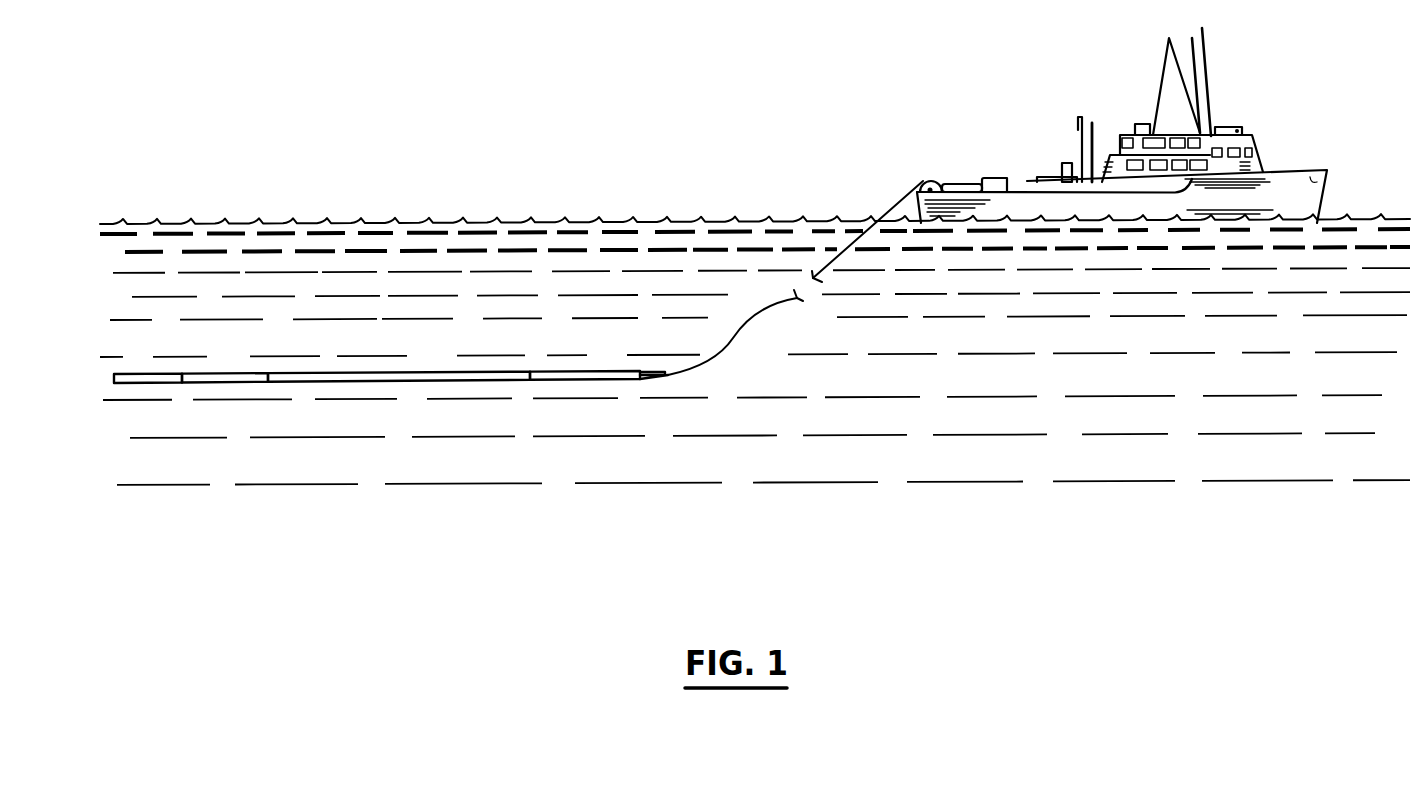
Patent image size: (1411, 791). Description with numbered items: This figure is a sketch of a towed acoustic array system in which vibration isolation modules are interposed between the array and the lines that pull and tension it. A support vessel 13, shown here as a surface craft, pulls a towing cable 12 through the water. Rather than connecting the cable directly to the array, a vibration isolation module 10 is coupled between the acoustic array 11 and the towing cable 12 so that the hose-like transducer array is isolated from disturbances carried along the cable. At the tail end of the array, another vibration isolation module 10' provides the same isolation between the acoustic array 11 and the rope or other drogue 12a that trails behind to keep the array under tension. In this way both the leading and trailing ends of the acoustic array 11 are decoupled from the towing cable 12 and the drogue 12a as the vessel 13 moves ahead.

The vibration isolation module 10 is at (599, 350).
The vibration isolation module 10' is at (227, 353).
The acoustic array 11 is at (433, 373).
The towing cable 12 is at (757, 333).
The drogue 12a is at (135, 375).
The support vessel 13 is at (1021, 151).